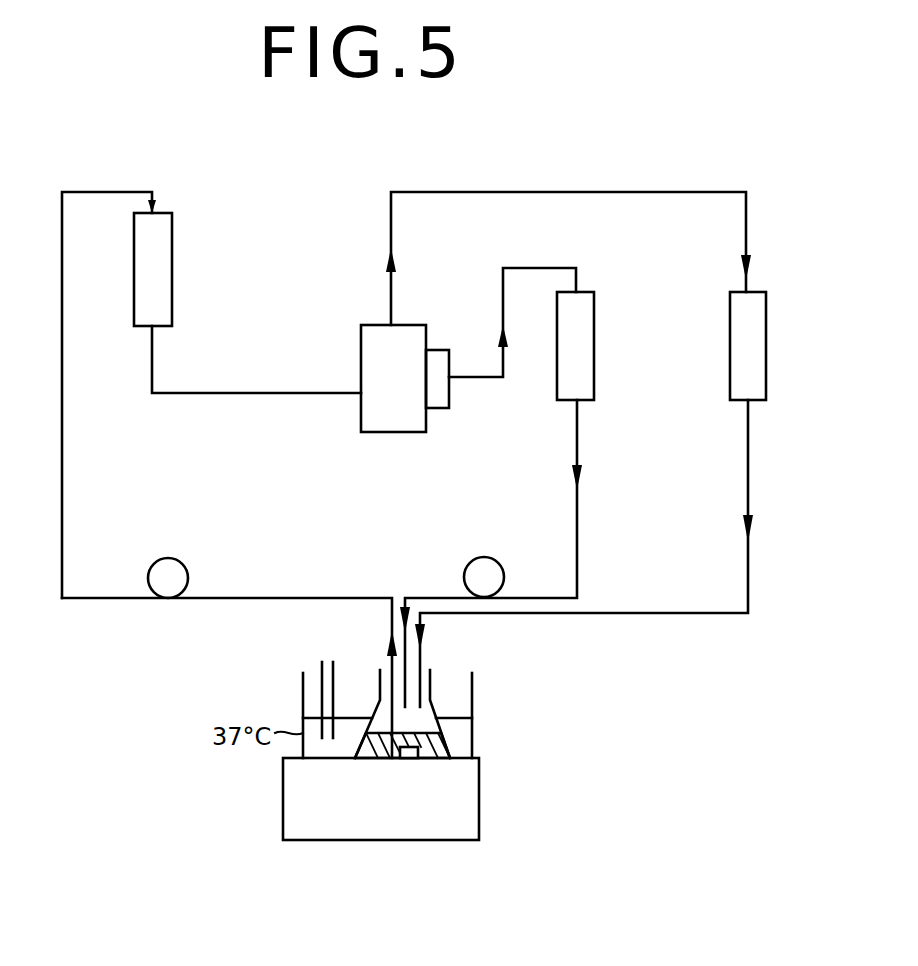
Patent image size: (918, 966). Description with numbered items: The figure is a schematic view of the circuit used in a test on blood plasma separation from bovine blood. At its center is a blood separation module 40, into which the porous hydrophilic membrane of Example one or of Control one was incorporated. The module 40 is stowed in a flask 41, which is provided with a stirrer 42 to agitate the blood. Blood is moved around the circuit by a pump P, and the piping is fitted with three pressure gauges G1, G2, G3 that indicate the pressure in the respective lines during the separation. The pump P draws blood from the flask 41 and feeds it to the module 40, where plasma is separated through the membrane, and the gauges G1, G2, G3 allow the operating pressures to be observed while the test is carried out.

The blood separation module 40 is at (397, 432).
The flask 41 is at (443, 740).
The stirrer 42 is at (289, 803).
The pressure gauge G1 is at (162, 212).
The pressure gauge G2 is at (585, 291).
The pressure gauge G3 is at (755, 291).
The pump P is at (326, 577).